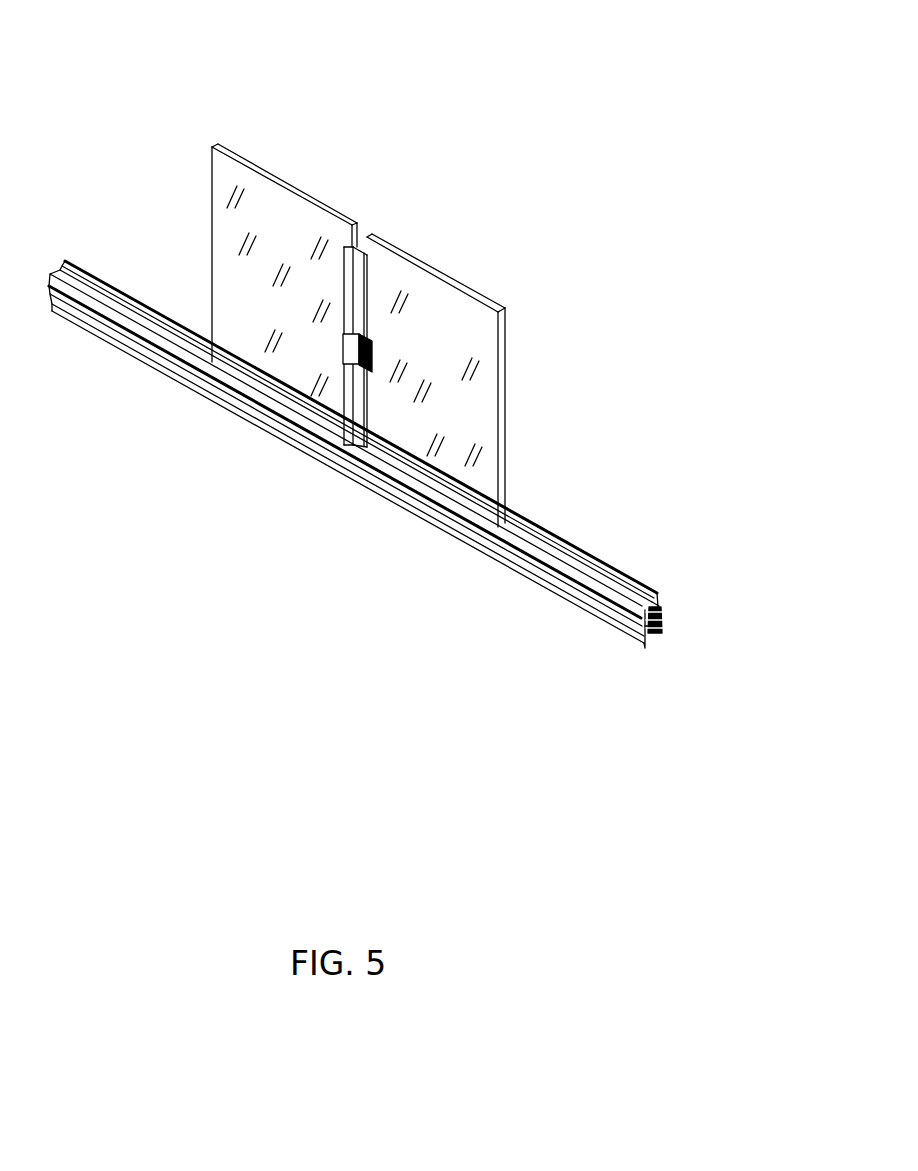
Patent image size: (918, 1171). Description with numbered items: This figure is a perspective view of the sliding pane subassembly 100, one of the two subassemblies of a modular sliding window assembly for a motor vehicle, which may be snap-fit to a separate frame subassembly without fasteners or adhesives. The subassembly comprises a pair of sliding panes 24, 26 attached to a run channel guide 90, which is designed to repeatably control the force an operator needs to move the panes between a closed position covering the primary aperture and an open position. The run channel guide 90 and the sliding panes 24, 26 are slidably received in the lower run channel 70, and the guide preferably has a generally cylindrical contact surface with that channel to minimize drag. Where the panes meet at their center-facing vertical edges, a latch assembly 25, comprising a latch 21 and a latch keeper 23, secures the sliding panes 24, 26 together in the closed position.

The sliding pane subassembly 100 is at (400, 122).
The sliding pane 24 is at (240, 158).
The sliding pane 26 is at (505, 338).
The latch assembly 25 is at (355, 340).
The latch 21 is at (345, 348).
The latch keeper 23 is at (372, 343).
The run channel guide 90 is at (580, 570).
The lower run channel 70 is at (660, 630).